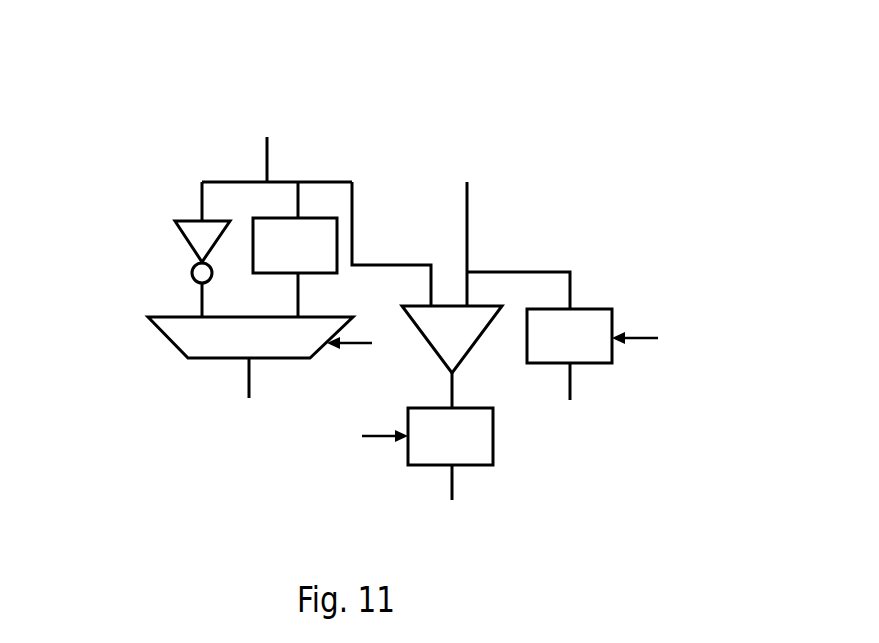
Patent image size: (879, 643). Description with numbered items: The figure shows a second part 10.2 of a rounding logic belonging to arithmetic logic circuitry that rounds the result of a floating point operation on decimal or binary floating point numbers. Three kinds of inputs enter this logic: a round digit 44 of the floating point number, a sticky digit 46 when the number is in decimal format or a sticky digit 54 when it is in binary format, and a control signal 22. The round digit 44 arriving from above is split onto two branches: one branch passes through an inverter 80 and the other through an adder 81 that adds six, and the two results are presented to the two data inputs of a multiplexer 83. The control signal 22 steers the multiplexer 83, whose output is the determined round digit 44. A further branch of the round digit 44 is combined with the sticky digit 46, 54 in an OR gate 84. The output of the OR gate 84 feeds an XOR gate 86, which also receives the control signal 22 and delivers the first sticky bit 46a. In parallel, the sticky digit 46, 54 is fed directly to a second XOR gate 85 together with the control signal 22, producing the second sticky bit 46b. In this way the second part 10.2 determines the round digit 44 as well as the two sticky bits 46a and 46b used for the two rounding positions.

The second part of rounding logic 10.2 is at (583, 88).
The round digit 44 is at (268, 128).
The inverter 80 is at (178, 240).
The adder 81 is at (273, 275).
The multiplexer 83 is at (158, 337).
The OR gate 84 is at (412, 305).
The XOR gate 85 is at (605, 308).
The XOR gate 86 is at (408, 418).
The control signal 22 is at (502, 387).
The sticky digit 46 is at (463, 177).
The sticky digit 54 is at (496, 209).
The sticky bit 46a is at (452, 503).
The sticky bit 46b is at (570, 405).